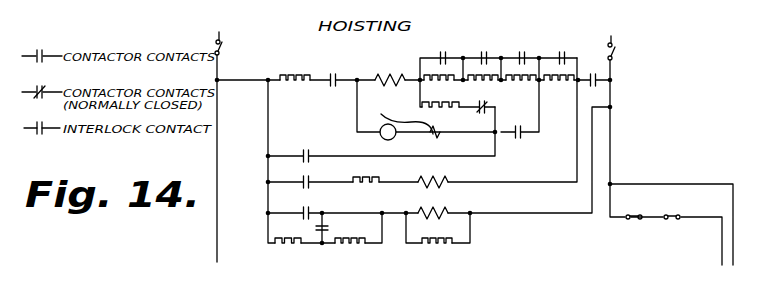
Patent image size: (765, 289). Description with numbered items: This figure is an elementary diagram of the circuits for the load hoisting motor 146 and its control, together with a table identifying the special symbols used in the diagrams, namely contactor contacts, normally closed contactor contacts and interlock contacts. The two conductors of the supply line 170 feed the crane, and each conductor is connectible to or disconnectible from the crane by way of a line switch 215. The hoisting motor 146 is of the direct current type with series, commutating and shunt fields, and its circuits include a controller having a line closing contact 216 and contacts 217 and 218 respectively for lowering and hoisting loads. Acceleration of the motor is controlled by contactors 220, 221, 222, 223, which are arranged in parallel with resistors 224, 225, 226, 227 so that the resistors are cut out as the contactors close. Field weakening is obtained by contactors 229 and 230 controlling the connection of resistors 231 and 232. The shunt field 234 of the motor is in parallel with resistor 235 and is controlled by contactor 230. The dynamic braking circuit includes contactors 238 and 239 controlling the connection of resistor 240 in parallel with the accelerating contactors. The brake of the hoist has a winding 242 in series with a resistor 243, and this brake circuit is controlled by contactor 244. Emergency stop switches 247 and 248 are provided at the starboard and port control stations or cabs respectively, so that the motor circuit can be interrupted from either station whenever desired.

The hoisting motor 146 is at (405, 120).
The supply line conductors 170 is at (219, 33).
The line switches 215 is at (222, 47).
The line closing contact 216 is at (598, 72).
The lowering contact 217 is at (338, 77).
The hoisting contact 218 is at (314, 144).
The accelerating contactor 220 is at (487, 52).
The accelerating contactor 221 is at (529, 52).
The accelerating contactor 222 is at (564, 54).
The accelerating contactor 223 is at (309, 210).
The accelerating resistor 224 is at (473, 82).
The accelerating resistor 225 is at (516, 84).
The accelerating resistor 226 is at (551, 84).
The accelerating resistor 227 is at (286, 246).
The field weakening contactor 229 is at (444, 52).
The field weakening contactor 230 is at (328, 230).
The field weakening resistor 231 is at (432, 82).
The field weakening resistor 232 is at (342, 246).
The shunt field 234 is at (438, 210).
The shunt field resistor 235 is at (437, 246).
The dynamic braking contactor 238 is at (518, 138).
The dynamic braking contactor 239 is at (492, 110).
The dynamic braking resistor 240 is at (441, 110).
The brake winding 242 is at (431, 178).
The brake resistor 243 is at (362, 178).
The brake contactor 244 is at (309, 179).
The emergency stop switch 247 is at (633, 221).
The emergency stop switch 248 is at (669, 220).